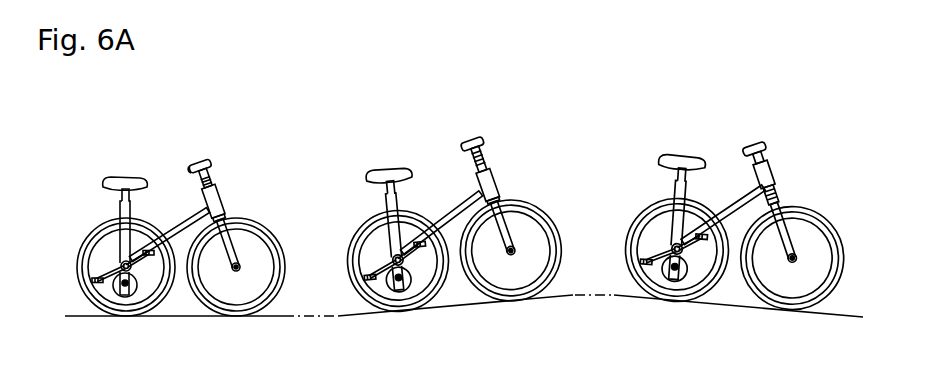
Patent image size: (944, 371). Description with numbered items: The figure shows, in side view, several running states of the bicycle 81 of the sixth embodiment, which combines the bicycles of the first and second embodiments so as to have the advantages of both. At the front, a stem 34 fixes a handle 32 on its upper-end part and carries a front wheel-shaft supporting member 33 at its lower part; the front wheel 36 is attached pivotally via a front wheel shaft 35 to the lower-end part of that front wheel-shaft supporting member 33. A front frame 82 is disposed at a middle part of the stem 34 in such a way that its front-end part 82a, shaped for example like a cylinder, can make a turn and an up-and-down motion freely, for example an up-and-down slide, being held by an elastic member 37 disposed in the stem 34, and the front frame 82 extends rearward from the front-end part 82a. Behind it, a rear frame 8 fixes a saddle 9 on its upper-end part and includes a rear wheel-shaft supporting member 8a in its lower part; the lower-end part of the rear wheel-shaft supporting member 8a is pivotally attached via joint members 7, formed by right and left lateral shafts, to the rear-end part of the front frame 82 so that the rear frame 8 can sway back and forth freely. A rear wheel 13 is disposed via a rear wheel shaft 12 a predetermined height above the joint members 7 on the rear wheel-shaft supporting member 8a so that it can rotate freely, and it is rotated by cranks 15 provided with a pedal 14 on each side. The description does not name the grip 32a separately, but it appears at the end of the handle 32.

The joint member 7 is at (120, 288).
The rear frame 8 is at (118, 206).
The rear wheel-shaft supporting member 8a is at (118, 226).
The saddle 9 is at (123, 178).
The rear wheel shaft 12 is at (120, 266).
The rear wheel 13 is at (82, 305).
The pedal 14 is at (97, 283).
The crank 15 is at (110, 273).
The handle 32 is at (205, 161).
The handlebar grip 32a is at (193, 160).
The front wheel-shaft supporting member 33 is at (223, 240).
The stem 34 is at (210, 167).
The front wheel shaft 35 is at (240, 262).
The front wheel 36 is at (282, 272).
The elastic member 37 is at (216, 220).
The bicycle 81 is at (185, 132).
The front frame 82 is at (178, 220).
The front-end part 82a is at (214, 207).